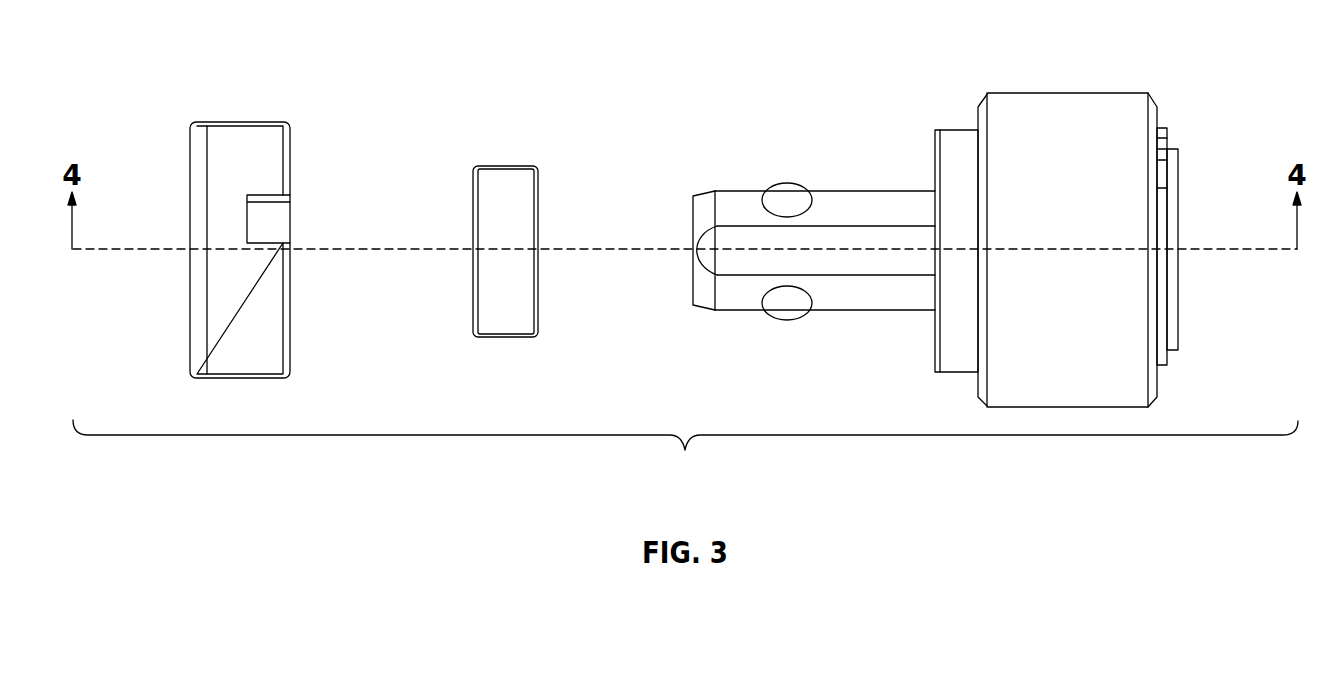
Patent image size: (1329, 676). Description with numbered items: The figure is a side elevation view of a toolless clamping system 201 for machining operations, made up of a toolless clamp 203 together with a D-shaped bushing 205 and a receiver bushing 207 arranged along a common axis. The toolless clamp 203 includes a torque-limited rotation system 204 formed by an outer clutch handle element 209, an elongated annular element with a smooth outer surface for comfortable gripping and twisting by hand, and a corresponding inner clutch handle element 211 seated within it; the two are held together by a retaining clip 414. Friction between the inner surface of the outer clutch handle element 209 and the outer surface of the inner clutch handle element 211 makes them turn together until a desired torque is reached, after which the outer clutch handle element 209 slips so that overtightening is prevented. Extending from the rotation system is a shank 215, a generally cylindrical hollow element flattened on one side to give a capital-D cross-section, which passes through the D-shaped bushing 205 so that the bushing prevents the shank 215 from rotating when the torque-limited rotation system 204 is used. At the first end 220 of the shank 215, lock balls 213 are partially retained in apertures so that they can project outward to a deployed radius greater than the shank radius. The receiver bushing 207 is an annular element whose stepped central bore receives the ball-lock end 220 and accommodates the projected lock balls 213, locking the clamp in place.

The toolless clamping system 201 is at (685, 454).
The toolless clamp 203 is at (789, 221).
The torque-limited rotation system 204 is at (1067, 215).
The D-shaped bushing 205 is at (505, 166).
The receiver bushing 207 is at (240, 122).
The outer clutch handle element 209 is at (1108, 105).
The inner clutch handle element 211 is at (958, 130).
The lock balls 213 is at (788, 195).
The shank 215 is at (872, 191).
The first end of the shank 220 is at (693, 207).
The retaining clip 414 is at (1167, 135).